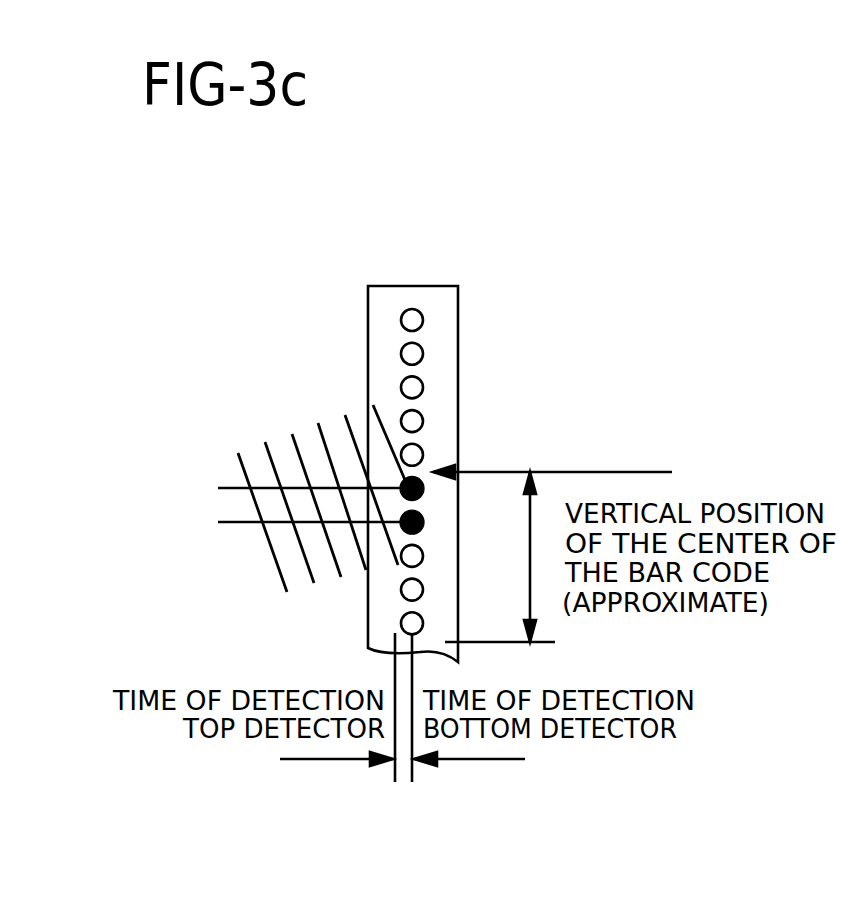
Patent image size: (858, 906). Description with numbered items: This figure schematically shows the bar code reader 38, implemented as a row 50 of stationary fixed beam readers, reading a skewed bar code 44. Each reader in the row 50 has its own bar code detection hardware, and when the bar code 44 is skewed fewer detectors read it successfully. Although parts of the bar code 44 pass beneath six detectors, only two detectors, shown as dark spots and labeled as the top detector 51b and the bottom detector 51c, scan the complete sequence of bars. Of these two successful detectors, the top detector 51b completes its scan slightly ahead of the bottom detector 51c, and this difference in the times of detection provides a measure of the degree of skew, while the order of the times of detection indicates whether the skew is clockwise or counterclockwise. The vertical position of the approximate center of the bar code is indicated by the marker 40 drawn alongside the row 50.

The row of stationary fixed beam readers 50 is at (423, 268).
The bar code reader 38 is at (459, 337).
The bar code 44 is at (305, 432).
The center line of bar code 40 is at (552, 472).
The top detector 51b is at (420, 492).
The bottom detector 51c is at (410, 532).